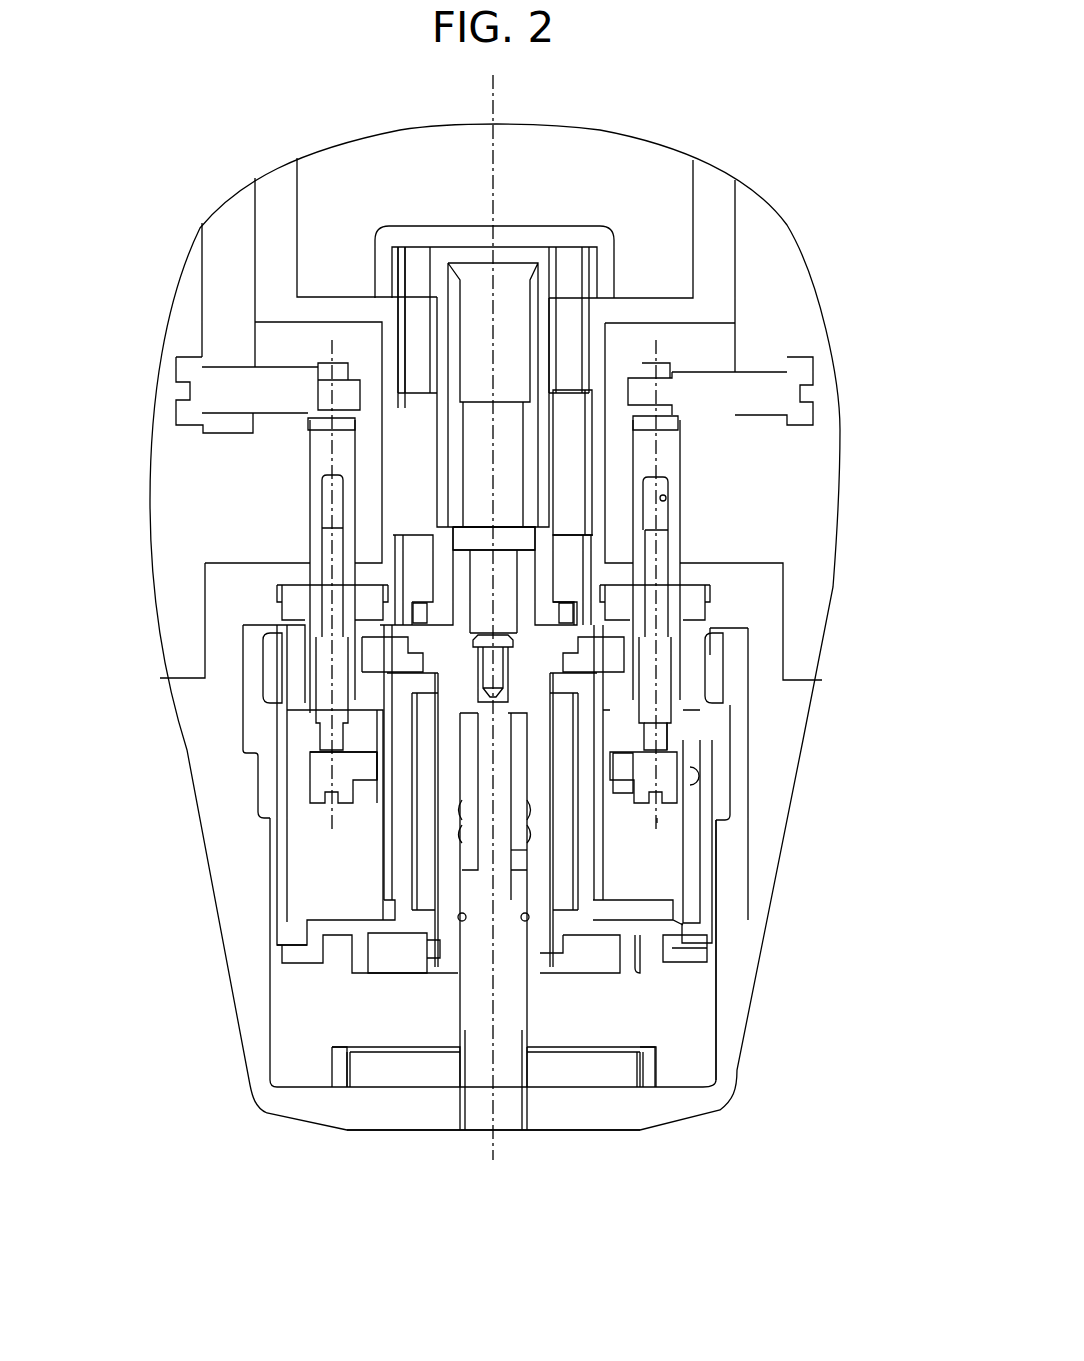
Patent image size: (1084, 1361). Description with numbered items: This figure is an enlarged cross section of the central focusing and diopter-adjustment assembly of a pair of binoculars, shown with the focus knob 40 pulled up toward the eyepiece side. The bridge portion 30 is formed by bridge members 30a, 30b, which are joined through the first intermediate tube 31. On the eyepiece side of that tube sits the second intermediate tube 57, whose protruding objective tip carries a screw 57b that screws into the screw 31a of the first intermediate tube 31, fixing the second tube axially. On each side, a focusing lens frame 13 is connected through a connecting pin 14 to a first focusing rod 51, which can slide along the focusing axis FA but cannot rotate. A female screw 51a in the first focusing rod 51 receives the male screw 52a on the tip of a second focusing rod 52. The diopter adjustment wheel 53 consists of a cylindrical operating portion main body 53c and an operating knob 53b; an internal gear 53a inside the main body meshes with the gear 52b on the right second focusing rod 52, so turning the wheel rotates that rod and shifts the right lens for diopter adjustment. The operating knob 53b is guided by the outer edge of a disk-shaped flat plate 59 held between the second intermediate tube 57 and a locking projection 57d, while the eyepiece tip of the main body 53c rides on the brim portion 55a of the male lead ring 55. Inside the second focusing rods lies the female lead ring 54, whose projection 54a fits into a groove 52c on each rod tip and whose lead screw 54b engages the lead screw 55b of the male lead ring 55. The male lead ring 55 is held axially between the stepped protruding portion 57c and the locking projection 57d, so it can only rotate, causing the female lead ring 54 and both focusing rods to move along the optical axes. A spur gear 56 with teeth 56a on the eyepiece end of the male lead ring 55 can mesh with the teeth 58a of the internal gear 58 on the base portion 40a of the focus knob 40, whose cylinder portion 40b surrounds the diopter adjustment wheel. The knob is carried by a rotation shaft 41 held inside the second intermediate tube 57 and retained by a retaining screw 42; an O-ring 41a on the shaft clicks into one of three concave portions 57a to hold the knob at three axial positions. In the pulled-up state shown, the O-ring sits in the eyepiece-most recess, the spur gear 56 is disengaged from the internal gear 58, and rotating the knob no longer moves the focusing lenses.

The focusing lens frame 13 is at (218, 297).
The connecting pin 14 is at (185, 408).
The bridge portion 30 is at (333, 297).
The bridge member 30a is at (578, 333).
The bridge member 30b is at (398, 408).
The first intermediate tube 31 is at (450, 482).
The screw 31a is at (537, 577).
The focus knob 40 is at (693, 1122).
The base portion 40a is at (598, 1110).
The cylinder portion 40b is at (730, 1023).
The rotation shaft 41 is at (465, 1013).
The O-ring 41a is at (470, 1020).
The retaining screw 42 is at (488, 678).
The first focusing rod 51 is at (315, 452).
The female screw 51a is at (668, 503).
The second focusing rod 52 is at (320, 683).
The male screw 52a is at (668, 543).
The gear 52b is at (626, 790).
The groove 52c is at (670, 743).
The diopter adjustment wheel 53 is at (270, 931).
The internal gear 53a is at (697, 783).
The operating knob 53b is at (267, 655).
The operating portion main body 53c is at (282, 897).
The female lead ring 54 is at (370, 774).
The projection 54a is at (347, 748).
The lead screw 54b is at (390, 798).
The male lead ring 55 is at (583, 922).
The brim portion 55a is at (670, 950).
The lead screw 55b is at (388, 867).
The spur gear 56 is at (628, 962).
The teeth 56a is at (642, 958).
The second intermediate tube 57 is at (540, 878).
The concave portion 57a is at (525, 853).
The screw 57b is at (462, 573).
The protruding portion 57c is at (548, 642).
The locking projection 57d is at (427, 948).
The internal gear 58 is at (337, 1068).
The teeth 58a is at (350, 1068).
The flat plate 59 is at (380, 660).
The focusing axis FA is at (657, 818).